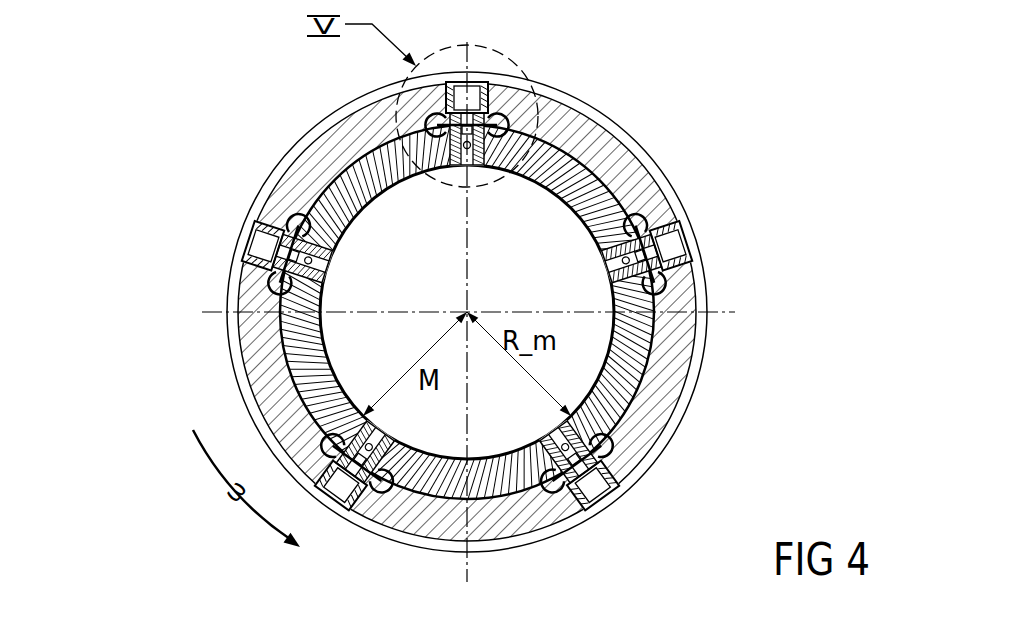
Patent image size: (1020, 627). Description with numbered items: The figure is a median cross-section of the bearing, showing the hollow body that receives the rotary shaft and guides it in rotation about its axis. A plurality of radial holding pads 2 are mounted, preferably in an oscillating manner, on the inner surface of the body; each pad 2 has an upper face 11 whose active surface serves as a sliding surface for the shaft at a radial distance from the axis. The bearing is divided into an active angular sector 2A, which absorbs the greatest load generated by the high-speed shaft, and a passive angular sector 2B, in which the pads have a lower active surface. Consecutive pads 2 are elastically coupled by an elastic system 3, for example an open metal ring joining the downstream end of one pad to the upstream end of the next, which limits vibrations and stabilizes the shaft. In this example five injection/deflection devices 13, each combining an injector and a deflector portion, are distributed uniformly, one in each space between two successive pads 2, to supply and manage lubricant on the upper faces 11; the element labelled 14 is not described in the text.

The radial holding pad 2 is at (436, 339).
The active angular sector 2A is at (360, 162).
The passive angular sector 2B is at (288, 332).
The elastic system 3 is at (706, 291).
The upper face 11 is at (590, 348).
The injection/deflection device 13 is at (253, 240).
The clamping element 14 is at (667, 250).